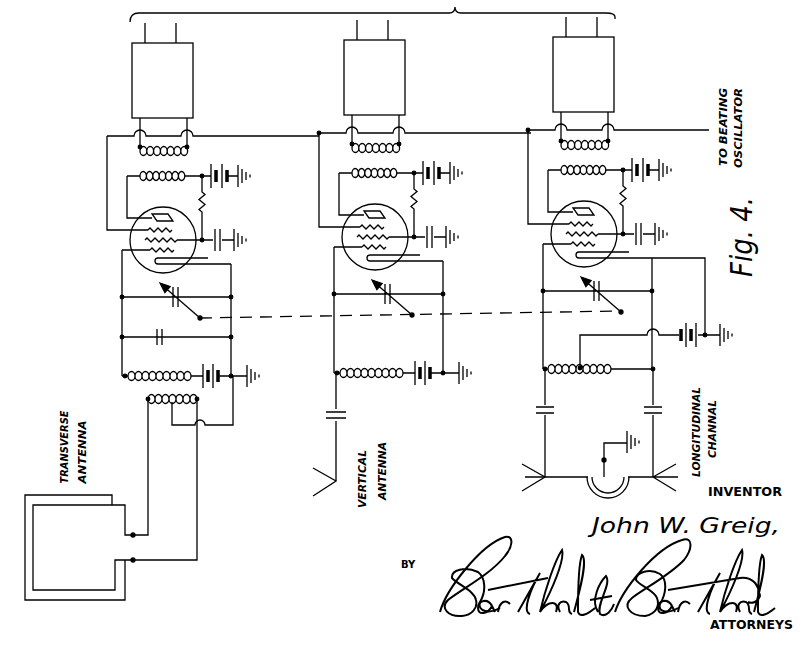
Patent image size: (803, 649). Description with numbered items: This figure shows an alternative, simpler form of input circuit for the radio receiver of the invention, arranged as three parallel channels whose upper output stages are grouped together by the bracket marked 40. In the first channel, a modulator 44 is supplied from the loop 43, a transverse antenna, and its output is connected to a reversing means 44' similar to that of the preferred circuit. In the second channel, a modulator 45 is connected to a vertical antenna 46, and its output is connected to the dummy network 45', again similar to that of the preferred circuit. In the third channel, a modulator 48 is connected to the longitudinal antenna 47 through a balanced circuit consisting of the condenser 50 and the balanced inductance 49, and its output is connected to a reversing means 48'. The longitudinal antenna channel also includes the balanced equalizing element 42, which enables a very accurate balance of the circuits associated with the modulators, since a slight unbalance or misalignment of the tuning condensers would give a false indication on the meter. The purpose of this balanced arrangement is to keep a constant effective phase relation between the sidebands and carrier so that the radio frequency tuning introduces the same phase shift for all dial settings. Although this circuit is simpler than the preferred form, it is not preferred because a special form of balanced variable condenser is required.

The condenser 40 is at (372, 11).
The balanced equalizing condenser 42 is at (594, 492).
The loop 43 is at (111, 499).
The modulator 44 is at (147, 240).
The reversing means 44' is at (140, 70).
The modulator 45 is at (360, 237).
The dummy network 45' is at (357, 67).
The vertical antenna 46 is at (325, 434).
The longitudinal antenna 47 is at (595, 462).
The modulator 48 is at (569, 234).
The reversing means 48' is at (567, 64).
The balanced inductance 49 is at (581, 143).
The condenser 50 is at (597, 289).